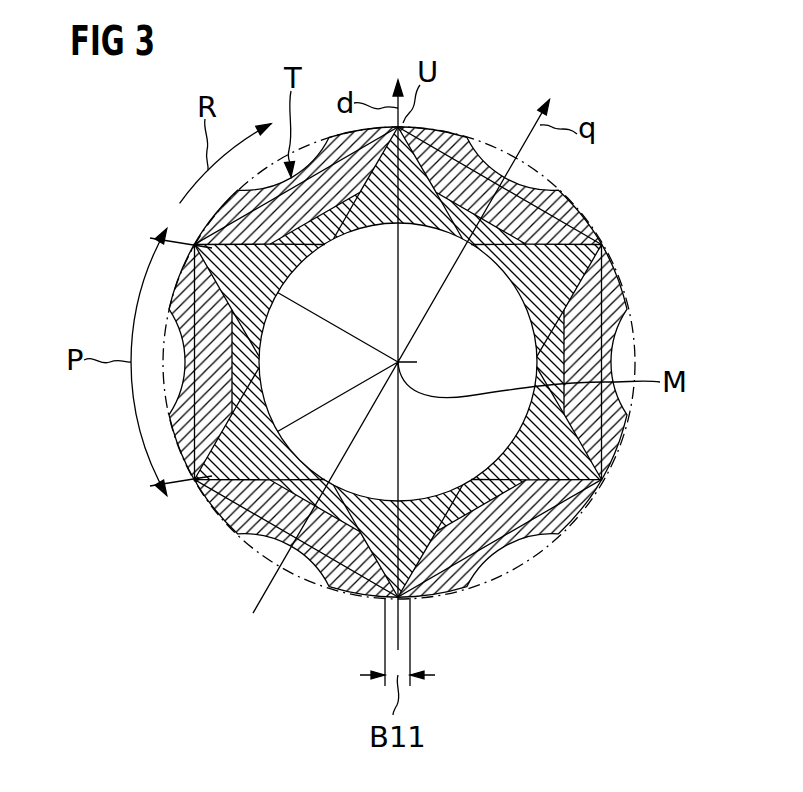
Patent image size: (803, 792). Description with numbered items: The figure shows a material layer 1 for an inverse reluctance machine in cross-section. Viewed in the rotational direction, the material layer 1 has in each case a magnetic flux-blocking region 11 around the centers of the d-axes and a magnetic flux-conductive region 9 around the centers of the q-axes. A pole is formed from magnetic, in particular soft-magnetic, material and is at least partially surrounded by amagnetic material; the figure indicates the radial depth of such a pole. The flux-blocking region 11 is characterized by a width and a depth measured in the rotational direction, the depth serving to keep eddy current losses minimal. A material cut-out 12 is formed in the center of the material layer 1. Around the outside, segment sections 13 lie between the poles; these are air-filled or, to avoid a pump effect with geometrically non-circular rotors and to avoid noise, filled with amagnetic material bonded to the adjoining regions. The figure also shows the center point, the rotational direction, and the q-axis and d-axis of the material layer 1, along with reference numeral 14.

The material layer 1 is at (494, 89).
The magnetic flux-conductive region 9 is at (577, 215).
The magnetic flux-blocking region 11 is at (598, 245).
The material cut-out 12 is at (458, 452).
The segment sections 13 is at (626, 343).
The lobe 14 is at (603, 478).